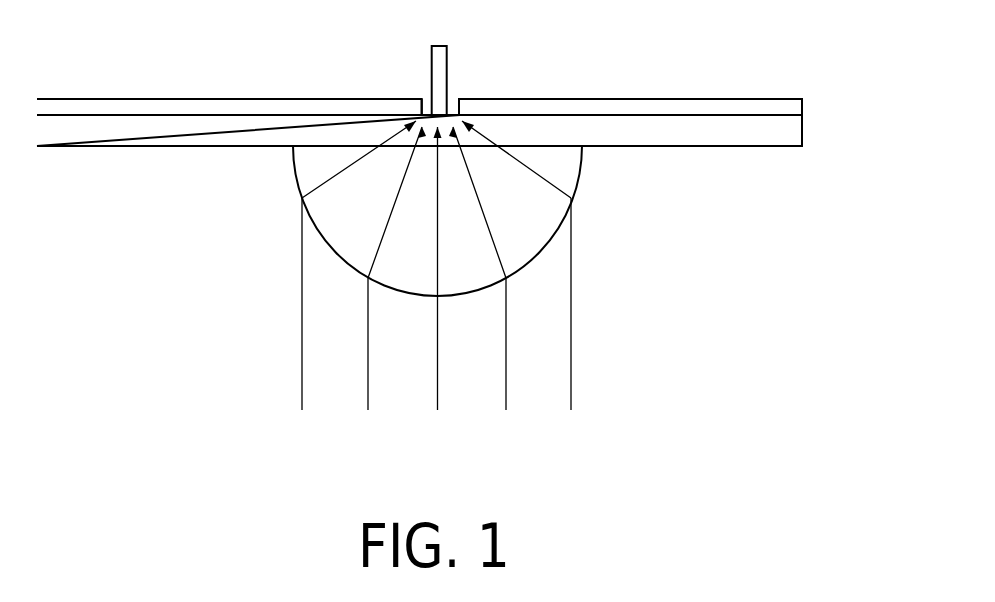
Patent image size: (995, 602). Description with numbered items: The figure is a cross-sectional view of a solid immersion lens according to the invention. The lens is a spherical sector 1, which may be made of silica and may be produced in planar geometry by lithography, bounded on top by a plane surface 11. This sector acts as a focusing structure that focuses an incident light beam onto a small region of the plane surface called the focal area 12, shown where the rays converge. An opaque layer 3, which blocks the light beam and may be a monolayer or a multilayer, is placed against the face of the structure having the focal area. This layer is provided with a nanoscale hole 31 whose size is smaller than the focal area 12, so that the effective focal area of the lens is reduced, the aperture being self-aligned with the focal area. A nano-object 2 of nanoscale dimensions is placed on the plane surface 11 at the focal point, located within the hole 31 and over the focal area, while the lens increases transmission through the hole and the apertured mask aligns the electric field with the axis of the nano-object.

The spherical sector 1 is at (520, 247).
The plane surface 11 is at (335, 147).
The focal area 12 is at (447, 157).
The nano-object 2 is at (438, 59).
The opaque layer 3 is at (621, 107).
The nanoscale hole 31 is at (453, 107).